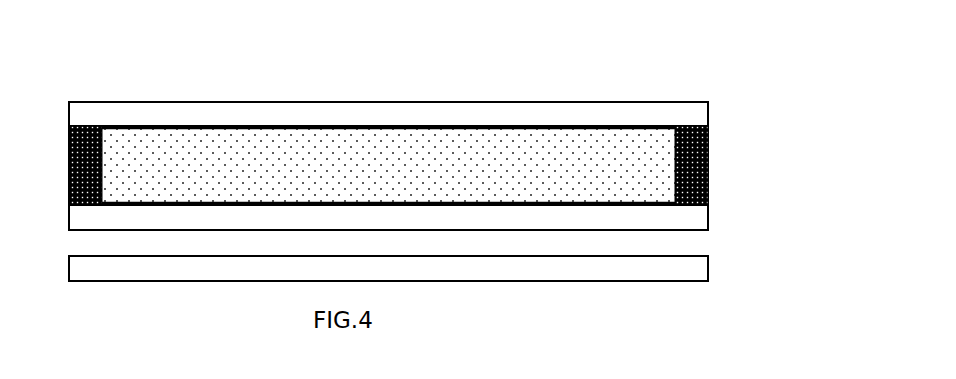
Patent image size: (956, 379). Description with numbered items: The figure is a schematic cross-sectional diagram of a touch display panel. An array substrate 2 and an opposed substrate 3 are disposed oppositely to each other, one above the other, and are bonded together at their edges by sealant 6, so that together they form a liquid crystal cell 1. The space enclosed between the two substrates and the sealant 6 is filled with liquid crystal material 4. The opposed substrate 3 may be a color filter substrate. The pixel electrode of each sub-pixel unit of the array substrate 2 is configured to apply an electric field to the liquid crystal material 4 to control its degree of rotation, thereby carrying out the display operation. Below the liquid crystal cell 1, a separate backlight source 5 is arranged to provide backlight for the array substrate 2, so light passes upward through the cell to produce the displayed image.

The liquid crystal cell 1 is at (755, 59).
The array substrate 2 is at (643, 213).
The opposed substrate 3 is at (643, 116).
The liquid crystal material 4 is at (273, 167).
The backlight source 5 is at (643, 264).
The sealant 6 is at (68, 170).